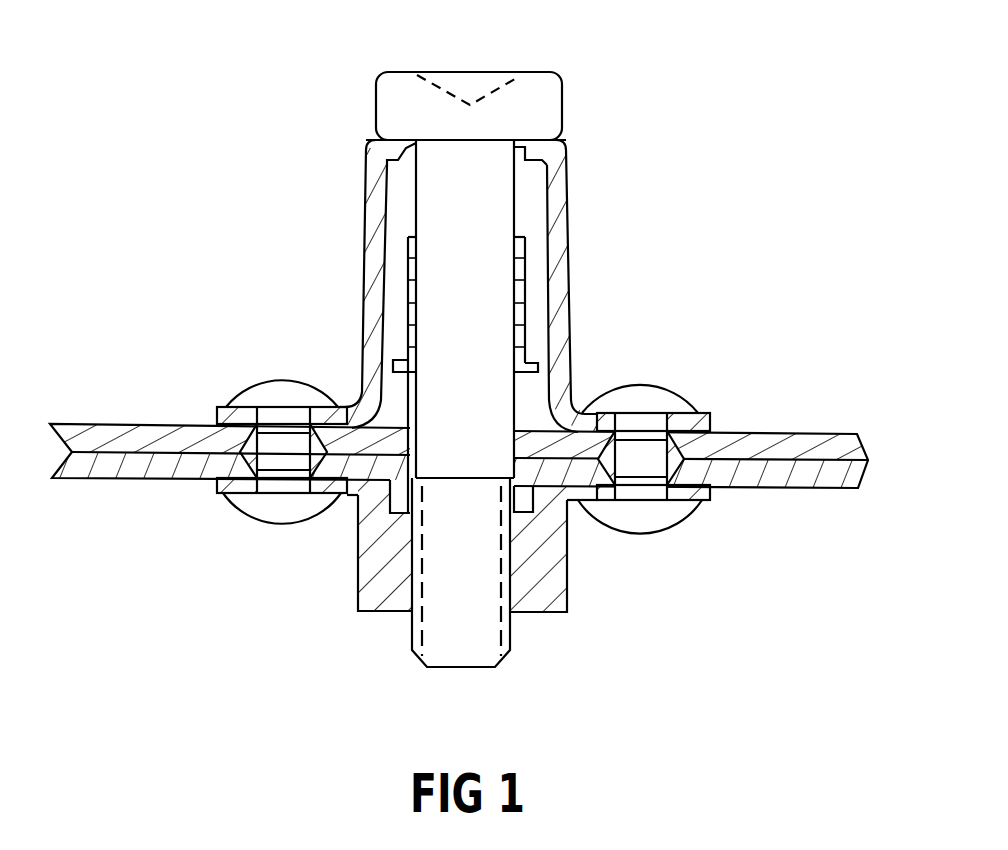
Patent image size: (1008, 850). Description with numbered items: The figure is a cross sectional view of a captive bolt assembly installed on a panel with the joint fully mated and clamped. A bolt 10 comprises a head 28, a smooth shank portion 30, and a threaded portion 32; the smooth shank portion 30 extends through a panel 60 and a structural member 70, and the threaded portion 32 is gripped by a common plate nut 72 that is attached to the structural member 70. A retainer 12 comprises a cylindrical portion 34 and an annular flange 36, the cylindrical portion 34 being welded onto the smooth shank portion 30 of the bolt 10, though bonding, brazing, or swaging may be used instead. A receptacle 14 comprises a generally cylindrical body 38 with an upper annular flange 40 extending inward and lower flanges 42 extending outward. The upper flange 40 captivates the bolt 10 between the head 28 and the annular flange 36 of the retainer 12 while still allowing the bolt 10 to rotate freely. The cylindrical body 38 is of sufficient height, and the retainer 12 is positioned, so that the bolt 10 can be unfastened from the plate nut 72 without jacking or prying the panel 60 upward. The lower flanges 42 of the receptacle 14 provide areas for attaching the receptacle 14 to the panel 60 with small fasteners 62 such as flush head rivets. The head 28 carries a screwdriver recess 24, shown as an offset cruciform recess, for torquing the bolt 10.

The bolt 10 is at (444, 346).
The retainer 12 is at (366, 343).
The receptacle 14 is at (522, 247).
The offset cruciform screwdriver recess 24 is at (500, 78).
The head 28 is at (375, 108).
The smooth shank portion 30 is at (418, 188).
The threaded portion 32 is at (512, 635).
The cylindrical portion 34 is at (407, 303).
The annular flange 36 is at (403, 367).
The cylindrical body 38 is at (568, 277).
The upper annular flange 40 is at (560, 132).
The lower flanges 42 is at (703, 413).
The panel 60 is at (459, 444).
The small fasteners 62 is at (516, 414).
The structural member 70 is at (740, 488).
The plate nut 72 is at (567, 550).